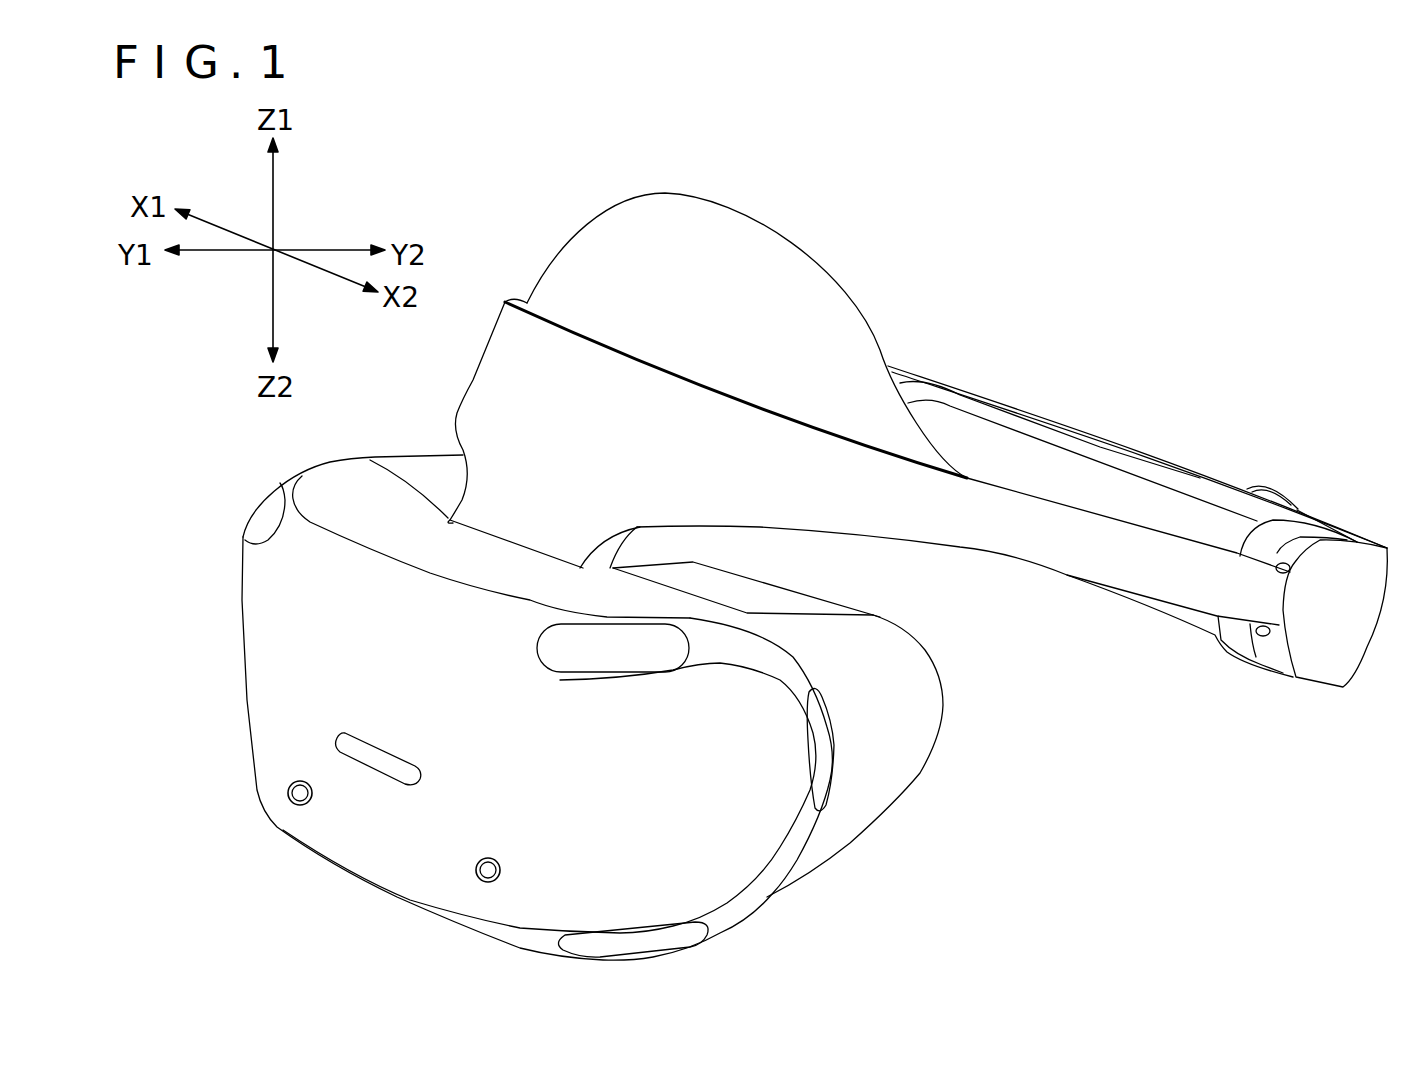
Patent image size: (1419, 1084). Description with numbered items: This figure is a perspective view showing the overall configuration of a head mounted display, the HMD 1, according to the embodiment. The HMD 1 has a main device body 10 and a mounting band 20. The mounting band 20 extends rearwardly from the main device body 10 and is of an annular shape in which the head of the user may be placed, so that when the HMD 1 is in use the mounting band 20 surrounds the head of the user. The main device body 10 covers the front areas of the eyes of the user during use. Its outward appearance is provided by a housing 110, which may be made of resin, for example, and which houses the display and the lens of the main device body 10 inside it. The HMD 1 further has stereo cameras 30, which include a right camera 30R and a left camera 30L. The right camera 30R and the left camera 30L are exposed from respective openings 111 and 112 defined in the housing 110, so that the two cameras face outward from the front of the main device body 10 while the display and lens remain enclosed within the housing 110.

The HMD 1 is at (1283, 250).
The main device body 10 is at (257, 793).
The housing 110 is at (260, 632).
The opening 111 is at (313, 797).
The opening 112 is at (502, 867).
The mounting band 20 is at (1065, 412).
The stereo cameras 30 is at (427, 790).
The right camera 30R is at (298, 782).
The left camera 30L is at (488, 858).